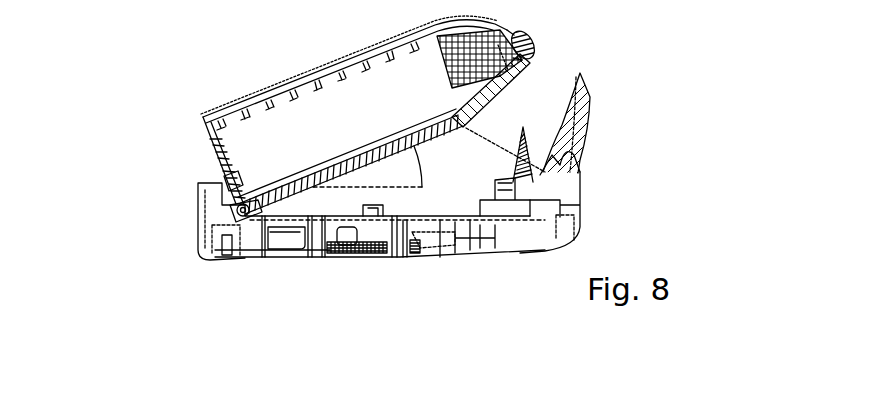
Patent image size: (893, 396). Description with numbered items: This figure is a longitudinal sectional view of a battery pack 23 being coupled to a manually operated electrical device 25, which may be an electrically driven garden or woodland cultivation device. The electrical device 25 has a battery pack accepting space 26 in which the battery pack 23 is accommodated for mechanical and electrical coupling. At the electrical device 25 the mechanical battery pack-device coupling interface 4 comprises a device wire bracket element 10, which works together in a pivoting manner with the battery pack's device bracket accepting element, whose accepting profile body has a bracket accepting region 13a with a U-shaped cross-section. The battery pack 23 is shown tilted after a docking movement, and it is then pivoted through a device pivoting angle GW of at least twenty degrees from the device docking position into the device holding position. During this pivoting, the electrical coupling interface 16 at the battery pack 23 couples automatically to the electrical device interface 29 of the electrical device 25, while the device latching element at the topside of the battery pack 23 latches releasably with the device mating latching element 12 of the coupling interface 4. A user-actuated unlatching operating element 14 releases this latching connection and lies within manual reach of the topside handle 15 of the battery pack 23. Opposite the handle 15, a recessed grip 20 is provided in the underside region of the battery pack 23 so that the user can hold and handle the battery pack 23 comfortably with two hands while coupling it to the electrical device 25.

The battery pack 23 is at (285, 92).
The recessed grip 20 is at (217, 153).
The bracket accepting region 13a is at (235, 188).
The device wire bracket element 10 is at (227, 180).
The topside handle 15 is at (534, 44).
The electrical coupling interface 16 is at (464, 110).
The device pivoting angle GW is at (384, 166).
The mechanical battery pack-device coupling interface 4 is at (217, 172).
The battery pack accepting space 26 is at (347, 207).
The manually operated electrical device 25 is at (400, 253).
The electrical device interface 29 is at (503, 184).
The user-actuated unlatching operating element 14 is at (525, 141).
The device mating latching element 12 is at (545, 170).